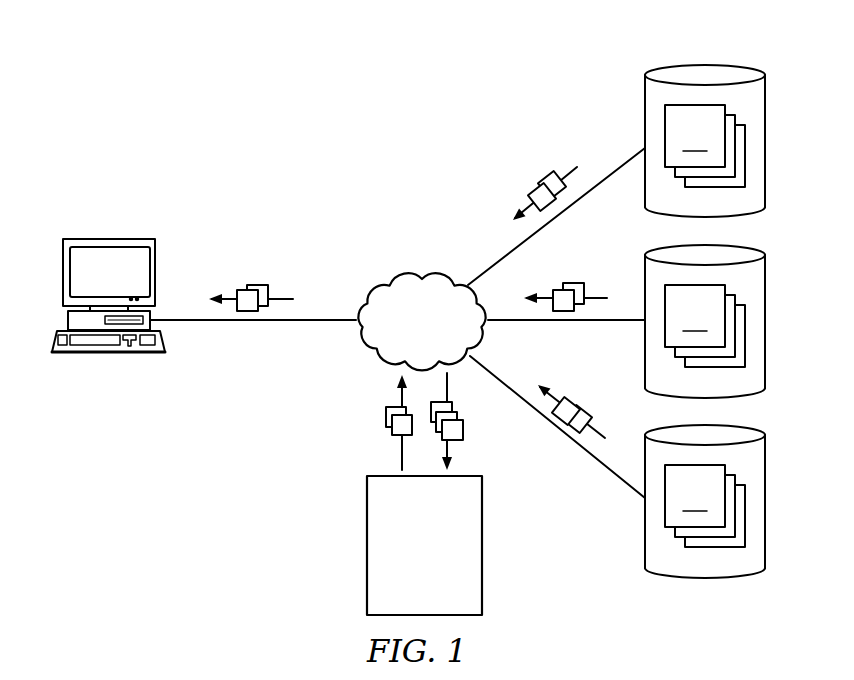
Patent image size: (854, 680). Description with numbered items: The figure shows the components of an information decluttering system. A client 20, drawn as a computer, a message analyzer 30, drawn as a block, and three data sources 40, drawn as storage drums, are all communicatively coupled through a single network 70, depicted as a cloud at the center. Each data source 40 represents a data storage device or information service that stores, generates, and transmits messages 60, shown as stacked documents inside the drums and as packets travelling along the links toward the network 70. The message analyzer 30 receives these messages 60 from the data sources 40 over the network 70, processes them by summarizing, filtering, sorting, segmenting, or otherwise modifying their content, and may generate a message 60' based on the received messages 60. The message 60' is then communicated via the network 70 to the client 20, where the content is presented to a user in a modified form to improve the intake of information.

The client 20 is at (108, 238).
The message analyzer 30 is at (482, 536).
The data source 40 is at (738, 60).
The message 60 is at (588, 326).
The message 60' is at (310, 356).
The network 70 is at (400, 273).